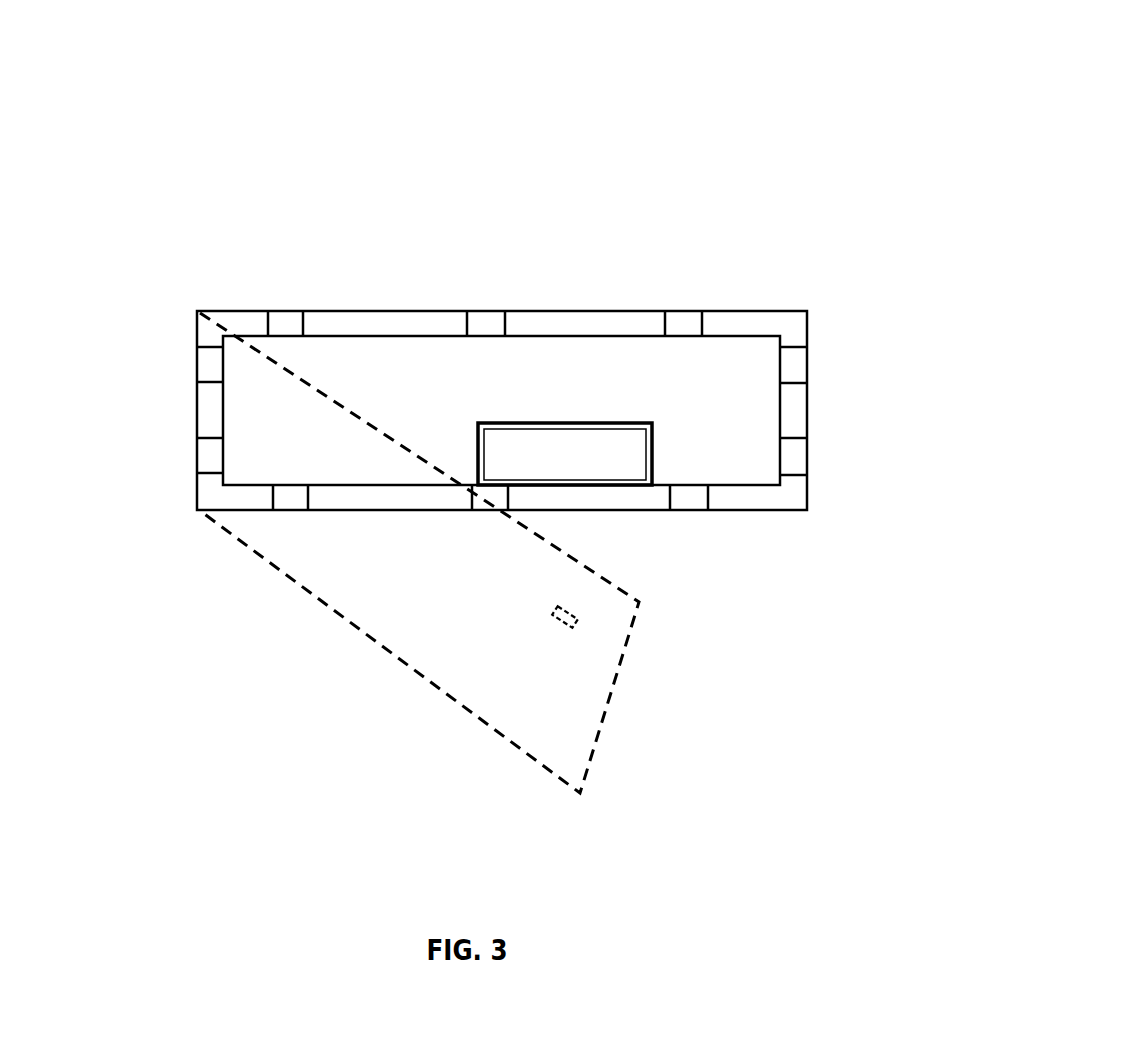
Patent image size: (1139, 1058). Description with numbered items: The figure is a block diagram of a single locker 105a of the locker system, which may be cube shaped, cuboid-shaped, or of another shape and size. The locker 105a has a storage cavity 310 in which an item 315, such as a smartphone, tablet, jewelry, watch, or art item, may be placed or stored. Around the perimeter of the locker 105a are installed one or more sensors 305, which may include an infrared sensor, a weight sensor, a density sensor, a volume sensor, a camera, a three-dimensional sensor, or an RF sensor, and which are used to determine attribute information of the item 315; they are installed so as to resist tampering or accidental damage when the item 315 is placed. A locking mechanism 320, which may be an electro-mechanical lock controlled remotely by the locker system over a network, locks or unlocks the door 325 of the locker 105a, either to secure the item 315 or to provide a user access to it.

The locker 105a is at (778, 92).
The sensor 305 is at (290, 312).
The storage cavity 310 is at (703, 402).
The item 315 is at (652, 457).
The locking mechanism 320 is at (807, 457).
The door 325 is at (603, 723).